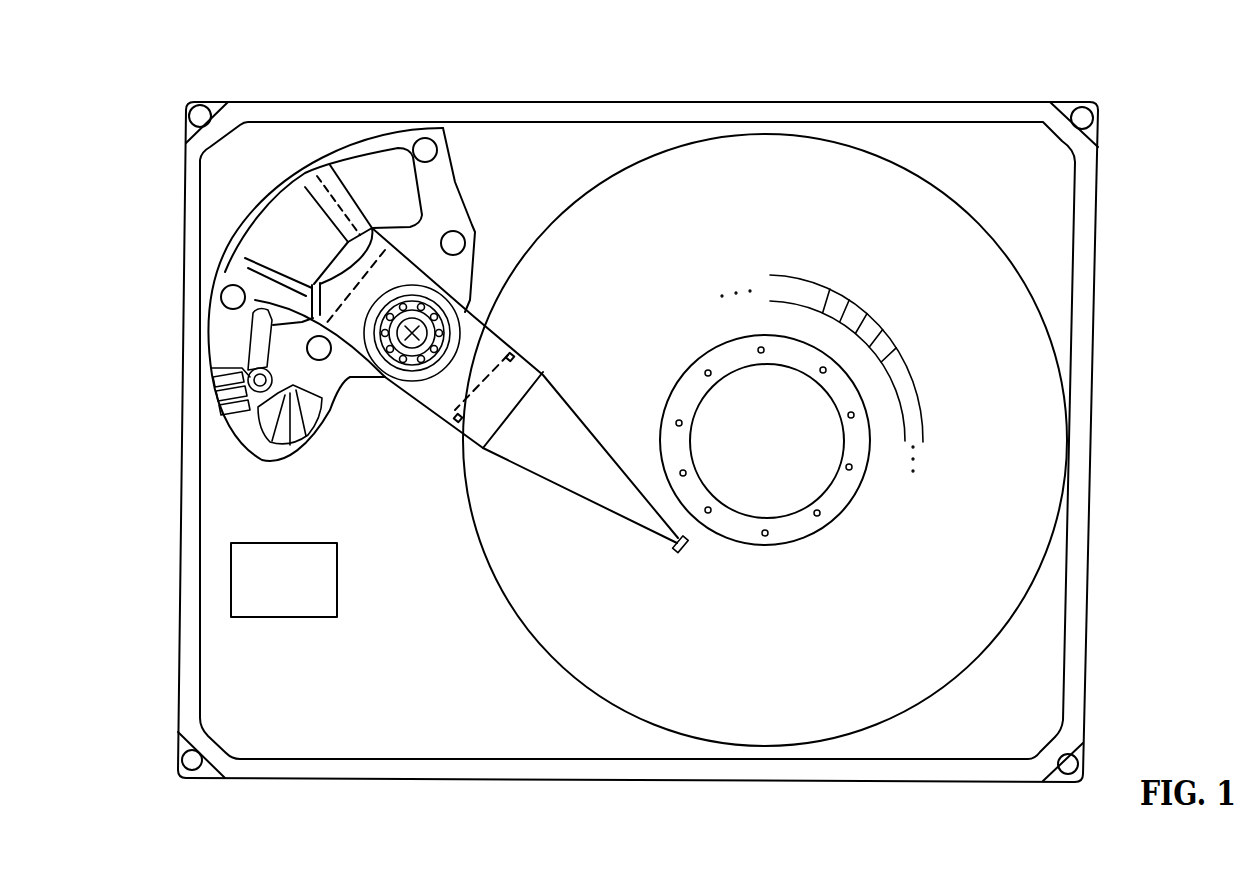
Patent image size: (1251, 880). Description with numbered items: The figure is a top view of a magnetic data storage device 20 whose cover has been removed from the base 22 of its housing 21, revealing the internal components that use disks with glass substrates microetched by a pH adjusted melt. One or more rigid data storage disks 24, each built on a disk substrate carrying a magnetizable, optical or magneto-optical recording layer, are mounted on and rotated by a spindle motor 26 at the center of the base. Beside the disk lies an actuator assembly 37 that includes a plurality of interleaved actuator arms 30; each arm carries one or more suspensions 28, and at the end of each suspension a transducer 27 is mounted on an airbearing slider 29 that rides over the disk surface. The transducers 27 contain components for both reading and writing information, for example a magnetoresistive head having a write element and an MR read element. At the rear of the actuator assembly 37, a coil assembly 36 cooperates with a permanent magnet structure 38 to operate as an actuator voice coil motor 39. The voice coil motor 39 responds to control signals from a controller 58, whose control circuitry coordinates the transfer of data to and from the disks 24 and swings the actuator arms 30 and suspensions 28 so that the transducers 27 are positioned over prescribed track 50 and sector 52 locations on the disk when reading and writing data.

The magnetic data storage device 20 is at (597, 56).
The housing 21 is at (475, 770).
The base 22 is at (342, 770).
The rigid data storage disk 24 is at (817, 226).
The spindle motor 26 is at (813, 482).
The transducer 27 is at (687, 550).
The suspension 28 is at (545, 458).
The airbearing slider 29 is at (675, 552).
The actuator arm 30 is at (425, 403).
The coil assembly 36 is at (296, 182).
The actuator assembly 37 is at (378, 396).
The permanent magnet structure 38 is at (438, 175).
The actuator voice coil motor (VCM) 39 is at (392, 234).
The track 50 is at (913, 405).
The sector 52 is at (890, 347).
The controller 58 is at (274, 584).